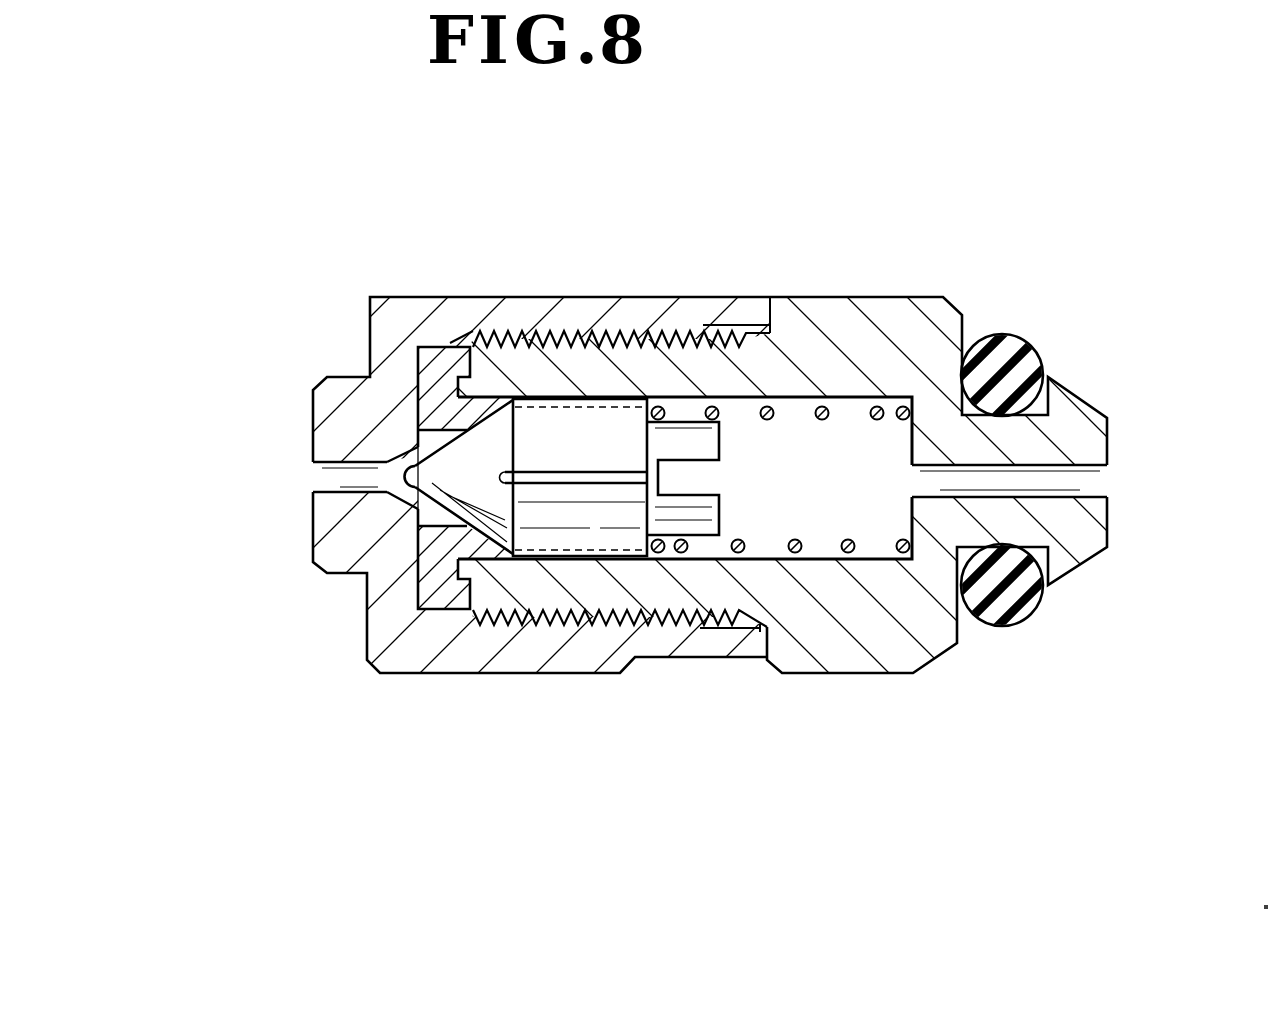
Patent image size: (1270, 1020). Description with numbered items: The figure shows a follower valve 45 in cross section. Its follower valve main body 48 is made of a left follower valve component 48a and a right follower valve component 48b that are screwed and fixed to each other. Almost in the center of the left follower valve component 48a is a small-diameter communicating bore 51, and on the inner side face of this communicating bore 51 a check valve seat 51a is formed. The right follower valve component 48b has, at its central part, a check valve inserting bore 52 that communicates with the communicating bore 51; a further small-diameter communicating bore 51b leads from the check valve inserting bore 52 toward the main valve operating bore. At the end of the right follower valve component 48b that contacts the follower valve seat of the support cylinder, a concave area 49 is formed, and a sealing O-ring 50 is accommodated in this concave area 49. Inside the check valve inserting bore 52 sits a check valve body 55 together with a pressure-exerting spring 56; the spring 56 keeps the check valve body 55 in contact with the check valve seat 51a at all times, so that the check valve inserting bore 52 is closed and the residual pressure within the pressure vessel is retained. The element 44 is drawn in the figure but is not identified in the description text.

The follower valve 45 is at (1140, 203).
The valve body (poppet) 44 is at (570, 397).
The follower valve main body 48 is at (848, 819).
The left follower valve component 48a is at (620, 675).
The right follower valve component 48b is at (800, 675).
The concave area 49 is at (1027, 390).
The O-ring 50 is at (1020, 615).
The communicating bore 51 is at (322, 470).
The check valve seat 51a is at (478, 438).
The communicating bore 51b is at (1110, 474).
The check valve inserting bore 52 is at (822, 549).
The check valve body 55 is at (549, 546).
The pressure-exerting spring 56 is at (823, 406).